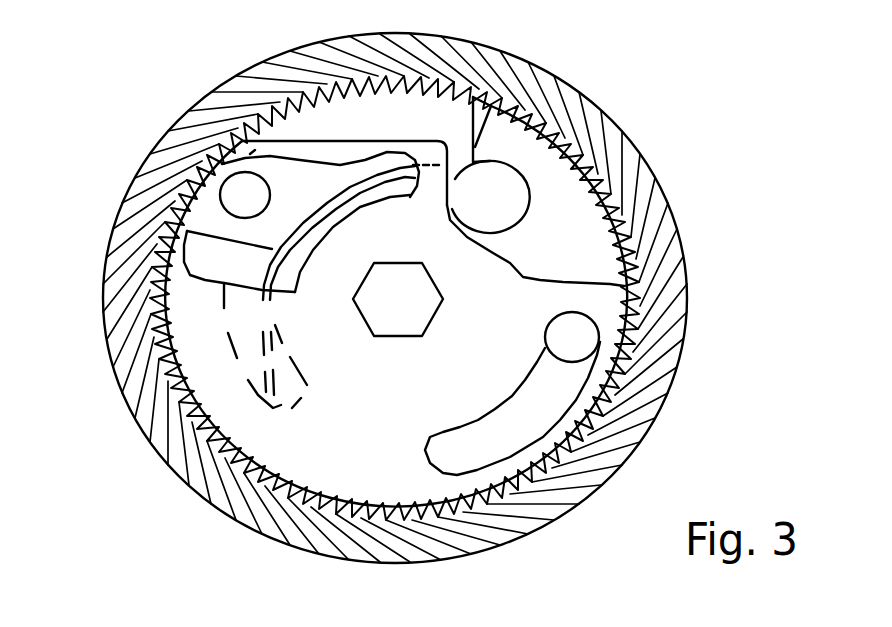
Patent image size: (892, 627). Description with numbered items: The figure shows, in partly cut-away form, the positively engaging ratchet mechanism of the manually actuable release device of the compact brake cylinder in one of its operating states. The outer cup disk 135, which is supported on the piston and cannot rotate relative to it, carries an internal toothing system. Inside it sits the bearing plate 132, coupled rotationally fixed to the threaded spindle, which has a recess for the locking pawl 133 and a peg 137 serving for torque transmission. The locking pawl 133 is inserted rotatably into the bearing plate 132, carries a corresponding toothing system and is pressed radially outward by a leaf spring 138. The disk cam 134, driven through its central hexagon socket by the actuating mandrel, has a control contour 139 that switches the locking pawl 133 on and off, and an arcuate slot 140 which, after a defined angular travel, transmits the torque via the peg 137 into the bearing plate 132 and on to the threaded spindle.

The bearing plate 132 is at (577, 230).
The locking pawl 133 is at (465, 115).
The disk cam 134 is at (522, 300).
The cup disk 135 is at (600, 108).
The peg 137 is at (578, 335).
The leaf spring 138 is at (275, 250).
The control contour 139 is at (323, 152).
The arcuate slot 140 is at (567, 392).